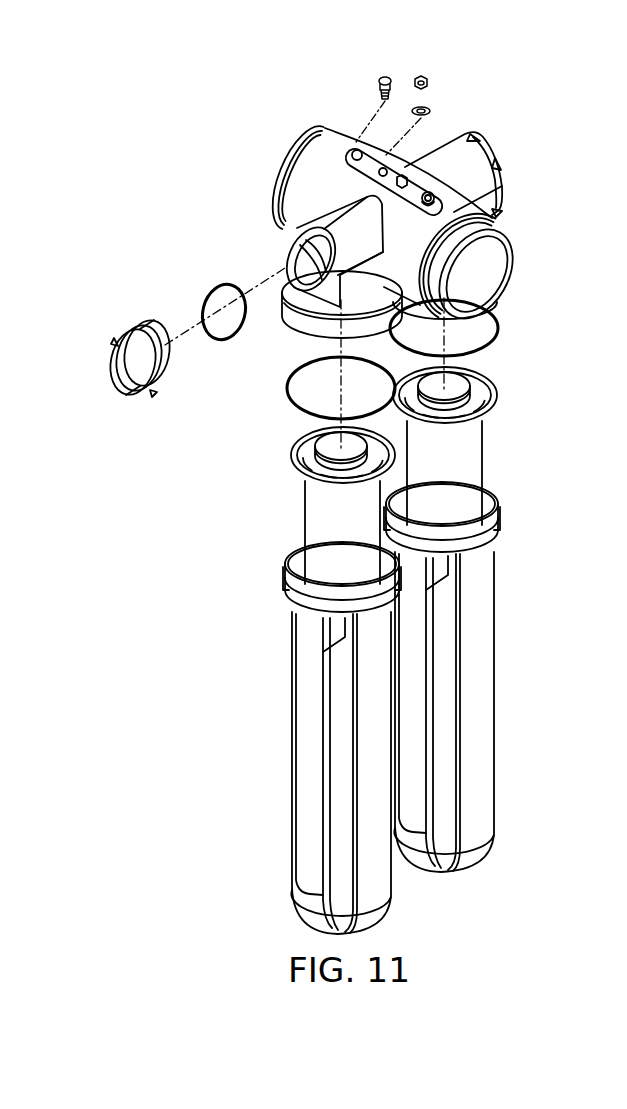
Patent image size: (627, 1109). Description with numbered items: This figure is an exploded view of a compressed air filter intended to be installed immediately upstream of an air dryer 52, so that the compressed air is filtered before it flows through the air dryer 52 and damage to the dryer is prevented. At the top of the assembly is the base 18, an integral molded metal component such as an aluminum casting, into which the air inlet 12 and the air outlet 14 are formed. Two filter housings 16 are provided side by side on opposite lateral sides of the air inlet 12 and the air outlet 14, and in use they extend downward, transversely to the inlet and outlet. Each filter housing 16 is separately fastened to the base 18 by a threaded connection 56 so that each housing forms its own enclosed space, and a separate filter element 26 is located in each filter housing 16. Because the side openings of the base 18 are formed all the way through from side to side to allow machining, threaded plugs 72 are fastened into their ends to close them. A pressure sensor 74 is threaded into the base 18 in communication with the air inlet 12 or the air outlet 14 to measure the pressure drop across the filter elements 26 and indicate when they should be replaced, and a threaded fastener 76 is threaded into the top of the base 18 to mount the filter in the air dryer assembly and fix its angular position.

The air inlet 12 is at (283, 145).
The air outlet 14 is at (513, 250).
The filter housing 16 is at (302, 720).
The base 18 is at (450, 213).
The filter element 26 is at (478, 441).
The air dryer 52 is at (506, 98).
The threaded connection 56 is at (297, 325).
The threaded plug 72 is at (505, 169).
The pressure sensor 74 is at (377, 84).
The threaded fastener 76 is at (429, 83).